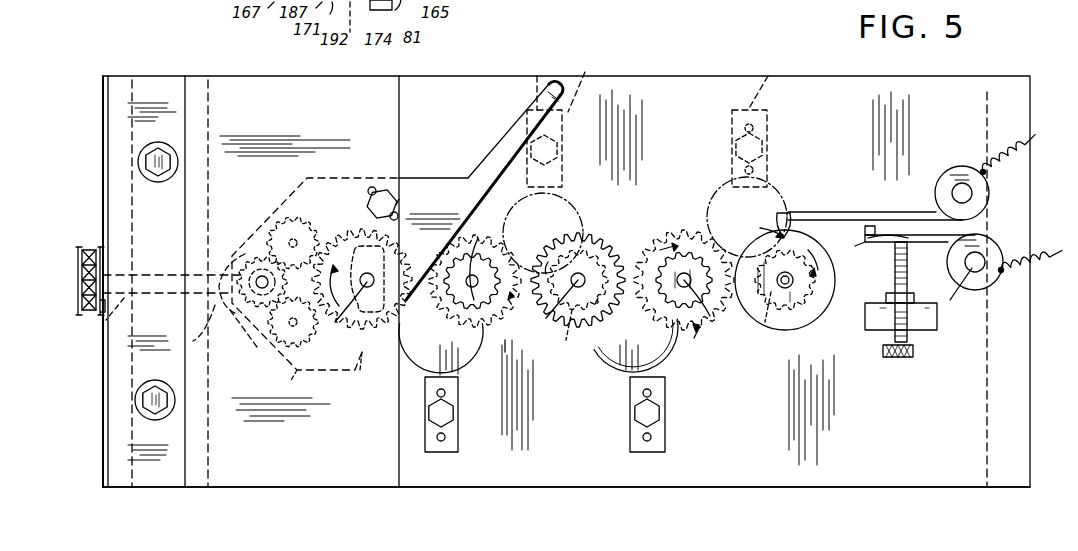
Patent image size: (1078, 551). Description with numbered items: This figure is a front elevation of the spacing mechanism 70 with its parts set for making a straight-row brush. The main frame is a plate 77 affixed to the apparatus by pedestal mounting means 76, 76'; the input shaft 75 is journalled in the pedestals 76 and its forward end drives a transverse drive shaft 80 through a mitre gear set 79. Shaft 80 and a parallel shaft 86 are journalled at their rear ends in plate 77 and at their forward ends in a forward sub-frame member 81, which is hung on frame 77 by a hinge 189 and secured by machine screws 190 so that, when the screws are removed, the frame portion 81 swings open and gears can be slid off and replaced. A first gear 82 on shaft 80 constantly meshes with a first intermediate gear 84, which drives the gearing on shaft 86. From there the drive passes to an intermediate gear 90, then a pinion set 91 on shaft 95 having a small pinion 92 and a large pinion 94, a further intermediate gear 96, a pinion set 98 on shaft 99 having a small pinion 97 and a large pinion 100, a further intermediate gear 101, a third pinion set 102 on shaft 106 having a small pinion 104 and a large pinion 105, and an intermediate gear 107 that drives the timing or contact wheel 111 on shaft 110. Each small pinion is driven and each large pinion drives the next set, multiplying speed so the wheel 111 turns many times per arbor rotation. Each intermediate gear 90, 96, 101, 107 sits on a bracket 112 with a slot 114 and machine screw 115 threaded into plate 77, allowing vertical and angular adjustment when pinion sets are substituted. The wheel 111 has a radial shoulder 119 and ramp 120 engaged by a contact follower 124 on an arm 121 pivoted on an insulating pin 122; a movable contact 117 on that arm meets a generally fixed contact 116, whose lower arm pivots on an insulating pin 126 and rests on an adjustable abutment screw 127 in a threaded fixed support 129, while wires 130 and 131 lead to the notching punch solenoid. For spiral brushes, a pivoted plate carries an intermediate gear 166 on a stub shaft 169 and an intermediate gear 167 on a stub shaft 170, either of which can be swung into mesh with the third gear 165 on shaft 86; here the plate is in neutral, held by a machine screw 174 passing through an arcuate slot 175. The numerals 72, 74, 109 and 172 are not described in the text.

The mechanism 70 is at (689, 73).
The spring 72 is at (82, 288).
The bracket 74 is at (78, 248).
The shaft 75 is at (99, 340).
The pedestal mounting means 76 is at (170, 268).
The pedestal mounting means 76' is at (969, 268).
The plate 77 is at (878, 477).
The mitre gear set 79 is at (214, 340).
The drive shaft 80 is at (263, 275).
The forward sub-frame member 81 is at (381, 100).
The first gear 82 is at (232, 336).
The first intermediate gear 84 is at (362, 272).
The shaft 86 is at (357, 299).
The intermediate gear 90 is at (462, 360).
The pinion set 91 is at (452, 236).
The small pinion 92 is at (499, 339).
The large pinion 94 is at (482, 281).
The shaft 95 is at (482, 253).
The intermediate gear 96 is at (570, 204).
The small pinion 97 is at (590, 334).
The pinion set 98 is at (620, 248).
The shaft 99 is at (572, 297).
The large pinion 100 is at (624, 352).
The intermediate gear 101 is at (625, 358).
The pinion set 102 is at (711, 350).
The small pinion 104 is at (664, 266).
The large pinion 105 is at (694, 226).
The shaft 106 is at (712, 310).
The intermediate gear 107 is at (767, 186).
The gear 109 is at (764, 338).
The shaft 110 is at (786, 284).
The timing or contact wheel 111 is at (763, 324).
The bracket 112 is at (460, 472).
The slot 114 is at (538, 76).
The machine screw 115 is at (558, 154).
The generally fixed contact 116 is at (912, 244).
The movable contact 117 is at (870, 242).
The shoulder 119 is at (784, 214).
The ramp 120 is at (753, 231).
The arm 121 is at (836, 210).
The pivot pin 122 is at (952, 196).
The contact follower 124 is at (863, 226).
The pivot pin 126 is at (935, 281).
The adjustable abutment screw 127 is at (910, 352).
The threaded fixed support 129 is at (932, 328).
The wire 130 is at (996, 154).
The wire 131 is at (1010, 262).
The third gear 165 is at (375, 369).
The first intermediate gear 166 is at (288, 209).
The intermediate gear 167 is at (309, 382).
The stub shaft 169 is at (304, 212).
The stub shaft 170 is at (293, 342).
The lever 172 is at (514, 132).
The machine screw 174 is at (398, 200).
The arcuate slot 175 is at (372, 190).
The hinge 189 is at (103, 130).
The machine screws 190 is at (162, 174).